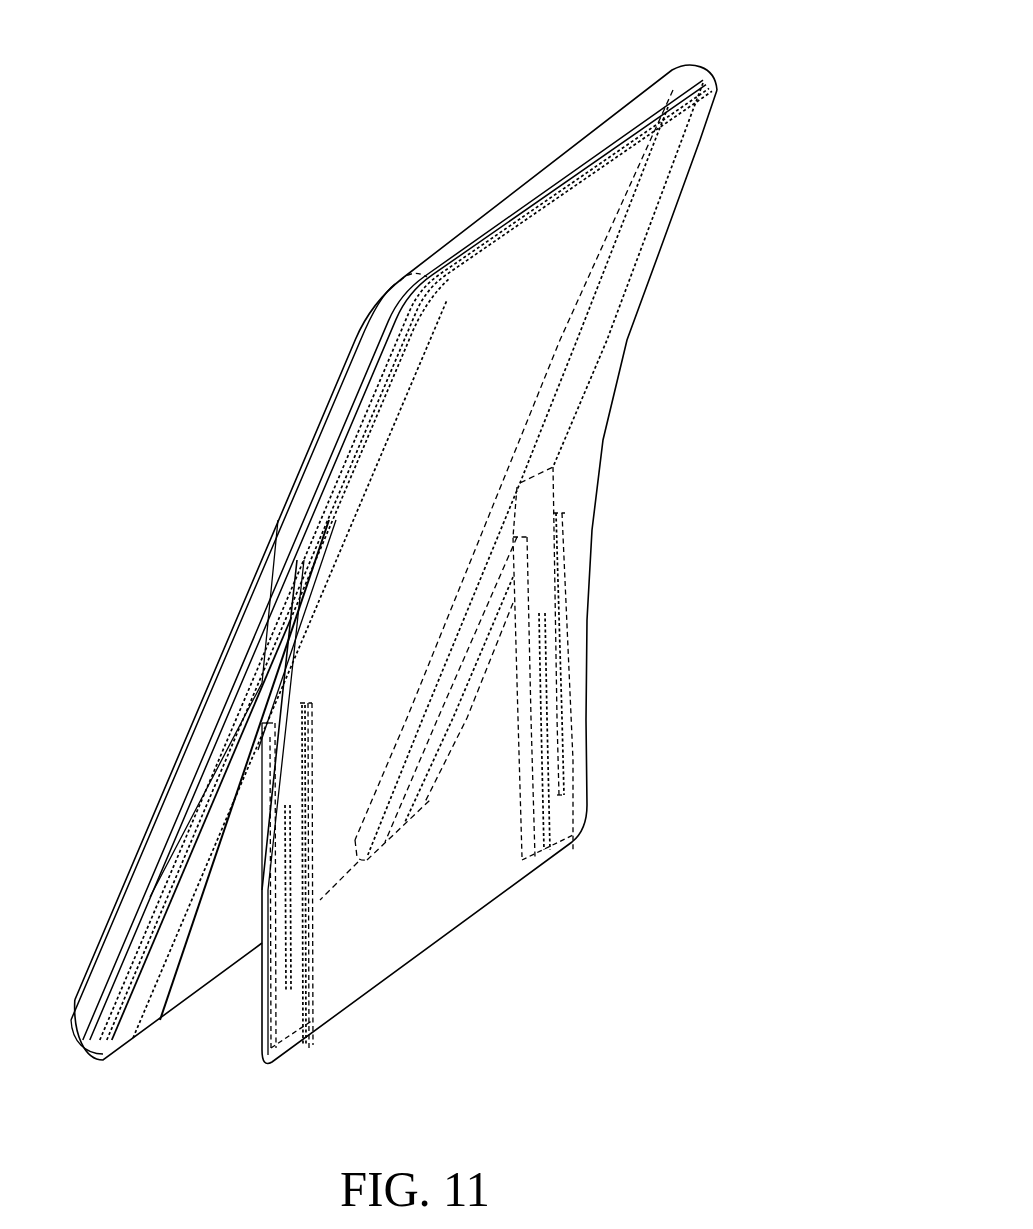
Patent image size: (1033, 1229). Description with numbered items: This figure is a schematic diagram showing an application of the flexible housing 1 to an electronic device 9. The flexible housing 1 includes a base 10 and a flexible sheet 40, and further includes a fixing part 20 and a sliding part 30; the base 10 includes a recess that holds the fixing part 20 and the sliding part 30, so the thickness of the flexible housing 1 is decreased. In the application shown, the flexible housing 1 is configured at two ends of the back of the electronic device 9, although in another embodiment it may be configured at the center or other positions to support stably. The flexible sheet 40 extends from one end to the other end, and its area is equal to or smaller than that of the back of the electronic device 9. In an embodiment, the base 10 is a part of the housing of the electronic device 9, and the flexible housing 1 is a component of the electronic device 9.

The flexible housing 1 is at (434, 130).
The electronic device 9 is at (306, 453).
The base 10 is at (287, 545).
The fixing part 20 is at (287, 642).
The sliding part 30 is at (550, 833).
The flexible sheet 40 is at (418, 927).